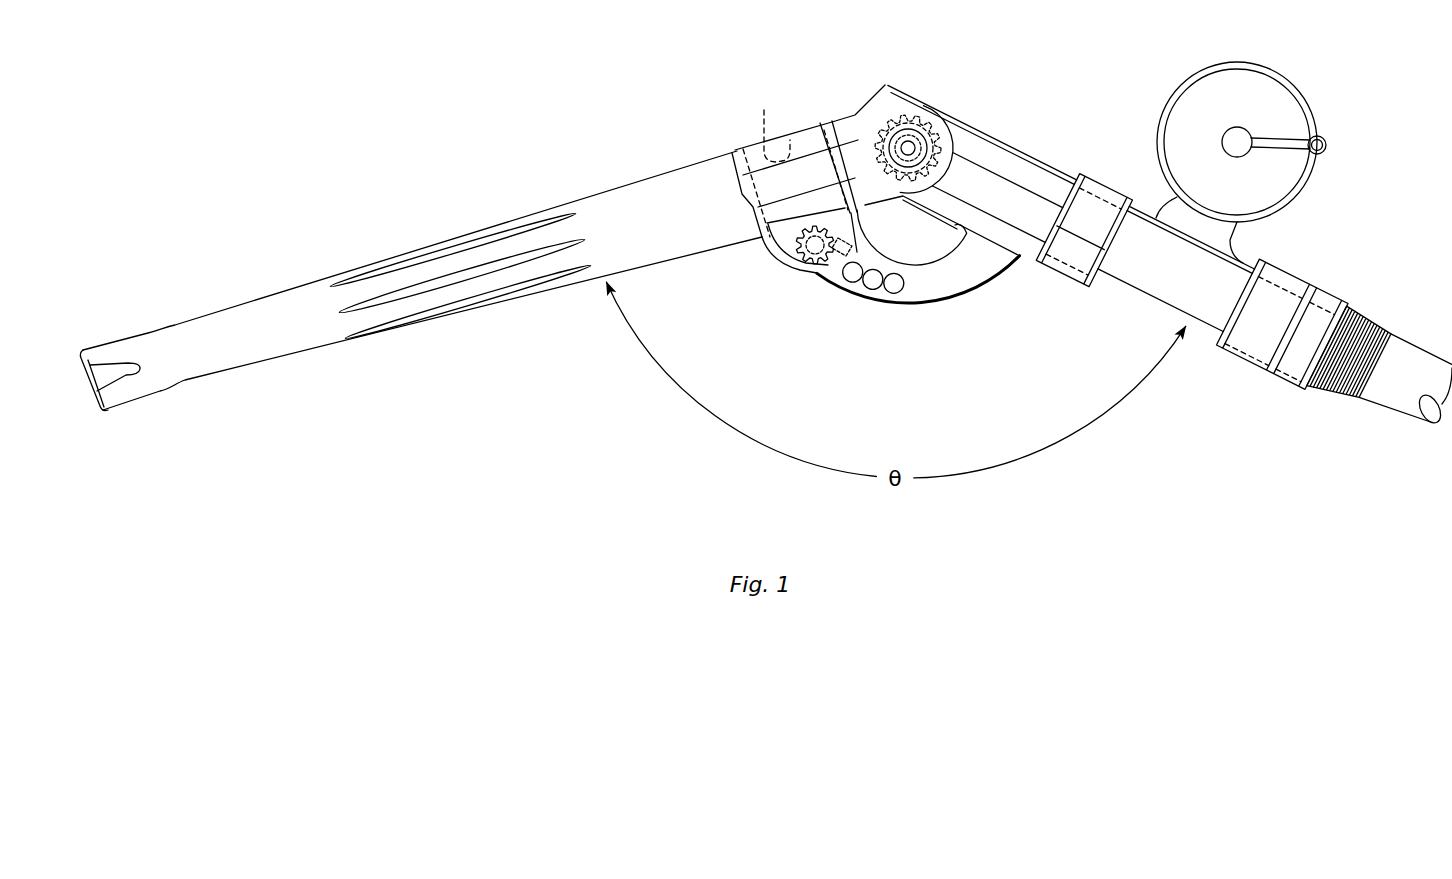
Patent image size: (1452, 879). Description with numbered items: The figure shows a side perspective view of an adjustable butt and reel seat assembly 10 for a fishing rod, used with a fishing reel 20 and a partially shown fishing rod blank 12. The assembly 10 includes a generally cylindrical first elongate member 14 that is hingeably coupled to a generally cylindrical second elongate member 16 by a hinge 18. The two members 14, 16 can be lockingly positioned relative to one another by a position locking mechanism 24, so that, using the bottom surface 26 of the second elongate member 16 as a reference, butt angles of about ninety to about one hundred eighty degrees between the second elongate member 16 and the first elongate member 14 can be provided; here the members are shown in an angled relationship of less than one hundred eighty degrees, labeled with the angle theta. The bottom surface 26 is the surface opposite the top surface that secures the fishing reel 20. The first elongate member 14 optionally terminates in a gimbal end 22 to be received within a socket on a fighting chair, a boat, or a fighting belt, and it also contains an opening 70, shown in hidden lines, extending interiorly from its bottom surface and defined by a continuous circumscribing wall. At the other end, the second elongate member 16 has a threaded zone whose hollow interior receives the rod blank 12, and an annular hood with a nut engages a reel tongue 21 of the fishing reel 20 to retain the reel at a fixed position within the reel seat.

The adjustable butt and reel seat assembly 10 is at (322, 127).
The fishing rod blank 12 is at (1388, 412).
The first elongate member 14 is at (457, 226).
The second elongate member 16 is at (1116, 302).
The hinge 18 is at (952, 98).
The fishing reel 20 is at (1312, 91).
The reel tongue 21 is at (1284, 271).
The gimbal end 22 is at (137, 424).
The position locking mechanism 24 is at (858, 307).
The bottom surface 26 is at (1160, 313).
The opening 70 is at (764, 110).